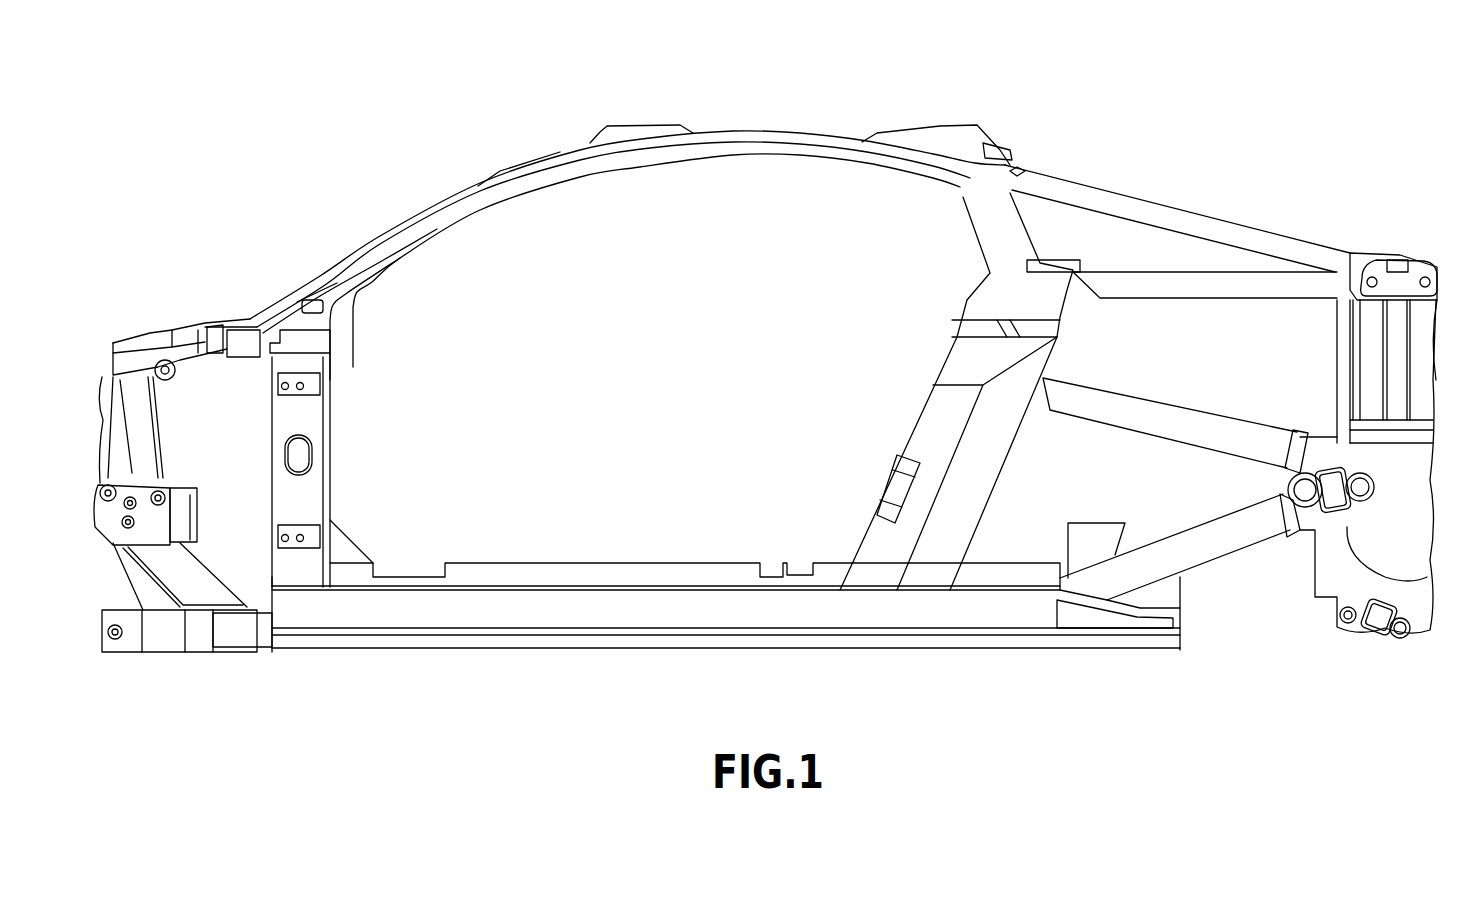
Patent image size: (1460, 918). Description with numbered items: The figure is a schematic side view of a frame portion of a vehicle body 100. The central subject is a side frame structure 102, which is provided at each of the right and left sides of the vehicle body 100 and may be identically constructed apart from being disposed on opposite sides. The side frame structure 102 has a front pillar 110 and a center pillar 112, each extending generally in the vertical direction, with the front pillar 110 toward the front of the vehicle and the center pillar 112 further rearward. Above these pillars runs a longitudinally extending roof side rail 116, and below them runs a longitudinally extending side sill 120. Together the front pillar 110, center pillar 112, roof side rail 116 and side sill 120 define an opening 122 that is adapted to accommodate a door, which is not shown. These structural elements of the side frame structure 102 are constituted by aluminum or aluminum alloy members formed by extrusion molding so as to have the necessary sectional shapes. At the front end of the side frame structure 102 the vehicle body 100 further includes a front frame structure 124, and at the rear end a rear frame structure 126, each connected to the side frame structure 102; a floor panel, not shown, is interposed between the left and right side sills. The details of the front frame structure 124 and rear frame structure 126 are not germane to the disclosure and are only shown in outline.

The vehicle body 100 is at (1193, 140).
The side frame structure 102 is at (372, 156).
The front pillar 110 is at (338, 463).
The center pillar 112 is at (908, 432).
The roof side rail 116 is at (633, 165).
The side sill 120 is at (595, 650).
The opening 122 is at (753, 192).
The front frame structure 124 is at (183, 668).
The rear frame structure 126 is at (1310, 638).